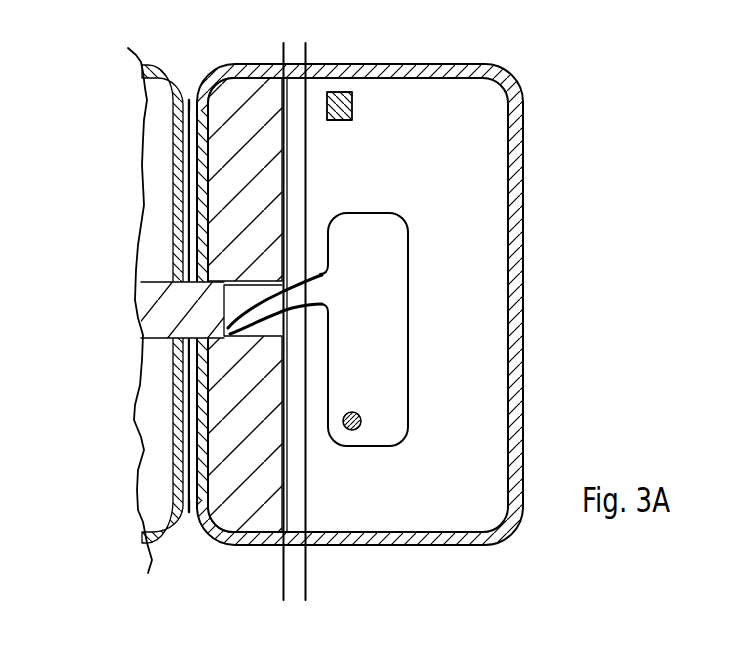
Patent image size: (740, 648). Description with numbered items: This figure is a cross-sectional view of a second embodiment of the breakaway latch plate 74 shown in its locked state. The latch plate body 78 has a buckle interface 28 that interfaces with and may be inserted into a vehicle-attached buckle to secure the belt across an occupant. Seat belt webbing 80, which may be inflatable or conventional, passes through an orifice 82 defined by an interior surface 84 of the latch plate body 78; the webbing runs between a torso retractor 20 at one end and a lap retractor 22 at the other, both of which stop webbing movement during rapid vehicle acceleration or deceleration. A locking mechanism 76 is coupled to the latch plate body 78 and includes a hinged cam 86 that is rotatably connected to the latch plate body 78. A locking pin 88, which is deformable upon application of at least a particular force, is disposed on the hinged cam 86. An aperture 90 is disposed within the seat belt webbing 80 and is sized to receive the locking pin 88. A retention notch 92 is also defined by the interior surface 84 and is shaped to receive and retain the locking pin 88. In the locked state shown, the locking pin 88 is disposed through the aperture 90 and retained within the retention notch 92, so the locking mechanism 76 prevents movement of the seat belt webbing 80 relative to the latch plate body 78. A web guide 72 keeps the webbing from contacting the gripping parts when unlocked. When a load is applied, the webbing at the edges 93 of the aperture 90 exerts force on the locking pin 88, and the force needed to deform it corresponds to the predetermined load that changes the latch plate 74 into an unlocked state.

The torso retractor 20 is at (295, 72).
The lap retractor 22 is at (295, 555).
The buckle interface 28 is at (165, 313).
The web guide 72 is at (354, 99).
The breakaway latch plate 74 is at (566, 184).
The locking mechanism 76 is at (424, 259).
The latch plate body 78 is at (493, 260).
The seat belt webbing 80 is at (300, 157).
The orifice 82 is at (300, 148).
The interior surface 84 is at (286, 190).
The hinged cam 86 is at (392, 374).
The locking pin 88 is at (300, 280).
The aperture 90 is at (305, 267).
The retention notch 92 is at (224, 287).
The edges 93 is at (300, 280).